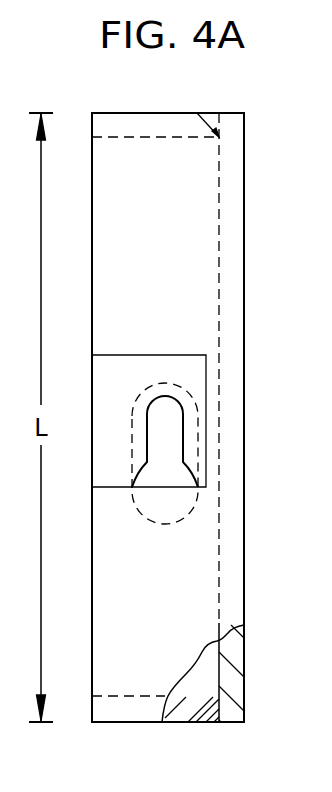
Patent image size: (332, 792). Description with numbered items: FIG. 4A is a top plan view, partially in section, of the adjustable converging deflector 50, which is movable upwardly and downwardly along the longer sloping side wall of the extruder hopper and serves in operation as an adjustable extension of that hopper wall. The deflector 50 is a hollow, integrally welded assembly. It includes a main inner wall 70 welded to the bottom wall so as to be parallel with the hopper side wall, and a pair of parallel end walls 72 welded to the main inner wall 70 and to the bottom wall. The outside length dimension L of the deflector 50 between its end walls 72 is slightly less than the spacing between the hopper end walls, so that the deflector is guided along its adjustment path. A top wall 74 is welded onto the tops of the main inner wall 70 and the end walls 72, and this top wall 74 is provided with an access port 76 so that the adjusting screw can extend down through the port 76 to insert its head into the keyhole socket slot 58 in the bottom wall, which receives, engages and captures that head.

The adjustable converging deflector 50 is at (269, 166).
The keyhole socket slot 58 is at (175, 438).
The main inner wall 70 is at (237, 643).
The end walls 72 is at (155, 130).
The top wall 74 is at (170, 272).
The access port 76 is at (206, 376).